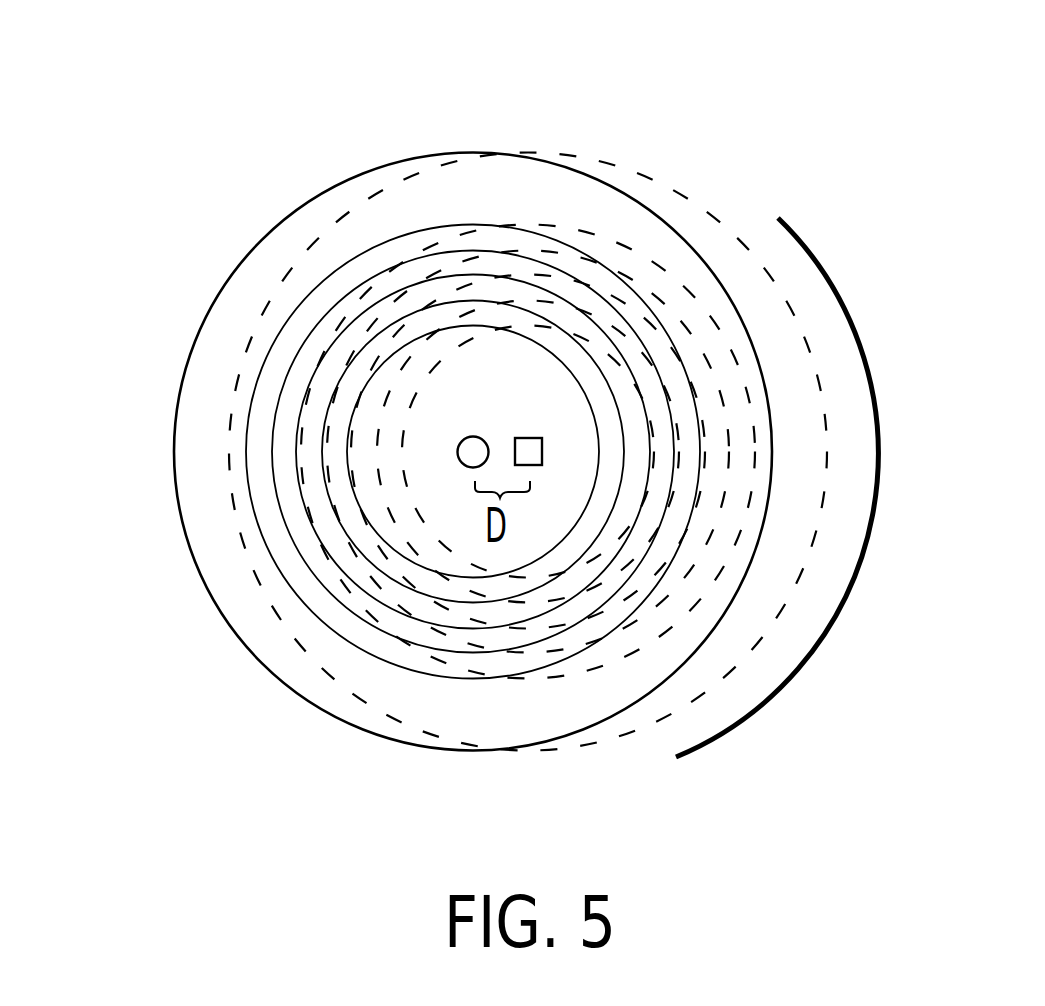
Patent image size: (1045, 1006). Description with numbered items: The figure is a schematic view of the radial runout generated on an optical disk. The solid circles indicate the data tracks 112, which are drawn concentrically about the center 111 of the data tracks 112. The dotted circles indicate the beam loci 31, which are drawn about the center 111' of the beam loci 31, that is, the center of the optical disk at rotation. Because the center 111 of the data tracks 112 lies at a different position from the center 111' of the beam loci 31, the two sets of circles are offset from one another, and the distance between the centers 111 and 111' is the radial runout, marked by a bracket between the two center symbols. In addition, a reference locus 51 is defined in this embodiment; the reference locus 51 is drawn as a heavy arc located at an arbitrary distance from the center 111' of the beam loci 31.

The beam loci 31 is at (254, 323).
The data tracks 112 is at (284, 457).
The center of the data tracks 111 is at (274, 516).
The center of the beam loci 111' is at (528, 405).
The reference locus 51 is at (858, 338).